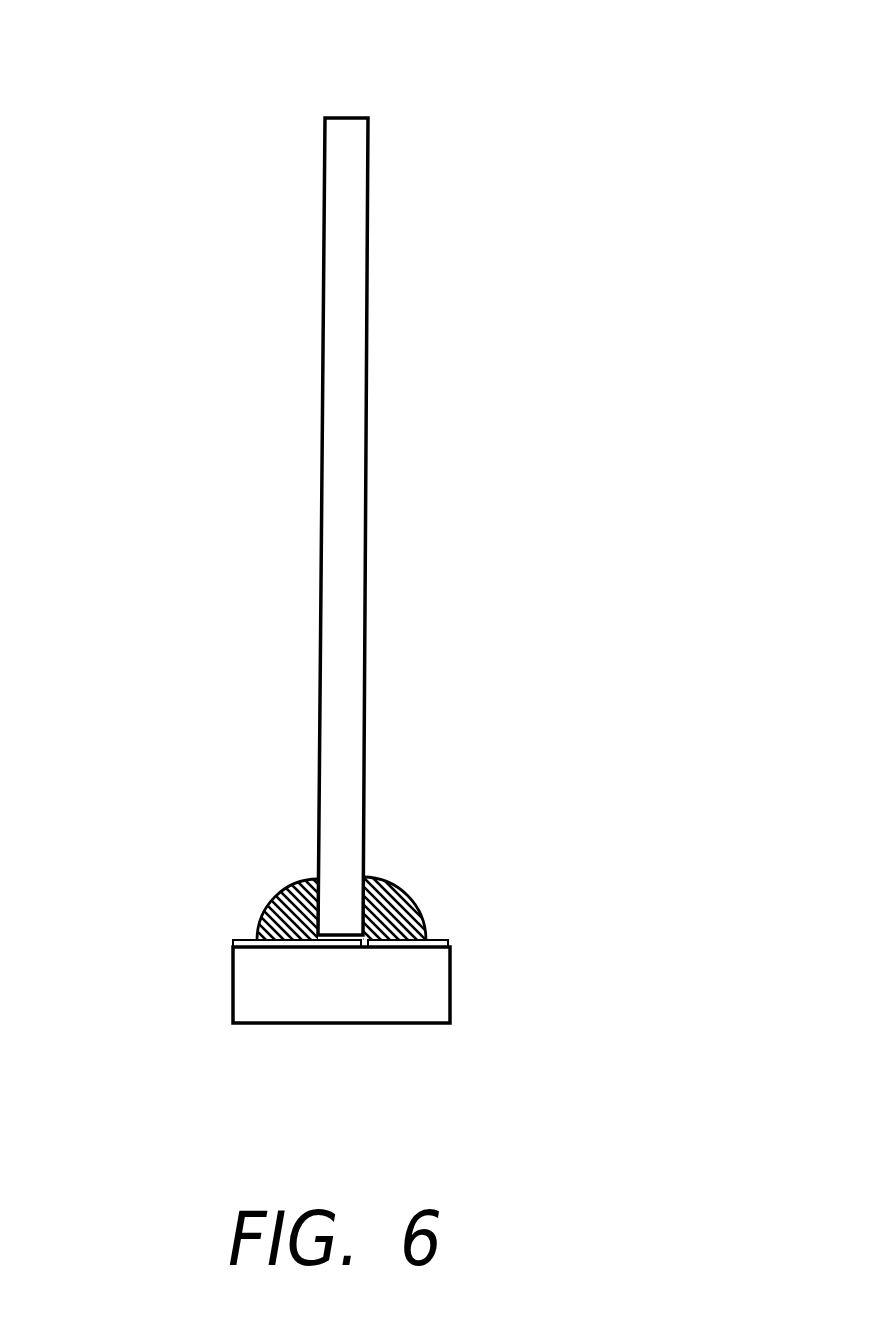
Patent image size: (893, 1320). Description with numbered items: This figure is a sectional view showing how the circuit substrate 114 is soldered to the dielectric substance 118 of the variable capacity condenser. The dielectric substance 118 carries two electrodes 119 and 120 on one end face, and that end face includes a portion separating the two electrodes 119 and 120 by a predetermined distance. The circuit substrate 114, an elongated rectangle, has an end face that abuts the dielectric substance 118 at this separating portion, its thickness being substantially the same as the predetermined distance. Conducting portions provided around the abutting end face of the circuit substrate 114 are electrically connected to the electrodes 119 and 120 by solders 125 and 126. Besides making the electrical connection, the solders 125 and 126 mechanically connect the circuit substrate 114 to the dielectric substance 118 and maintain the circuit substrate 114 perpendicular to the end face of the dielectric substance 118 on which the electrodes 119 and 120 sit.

The circuit substrate 114 is at (322, 172).
The dielectric substance 118 is at (443, 1027).
The electrode 119 is at (233, 950).
The electrode 120 is at (570, 922).
The solder 125 is at (282, 889).
The solder 126 is at (407, 887).